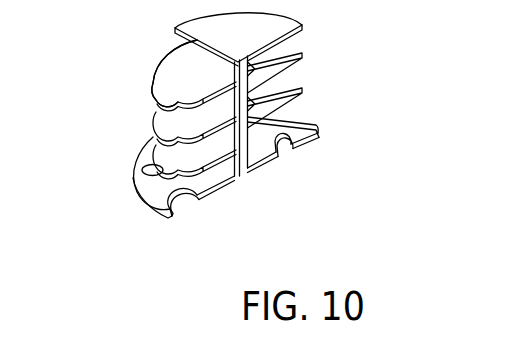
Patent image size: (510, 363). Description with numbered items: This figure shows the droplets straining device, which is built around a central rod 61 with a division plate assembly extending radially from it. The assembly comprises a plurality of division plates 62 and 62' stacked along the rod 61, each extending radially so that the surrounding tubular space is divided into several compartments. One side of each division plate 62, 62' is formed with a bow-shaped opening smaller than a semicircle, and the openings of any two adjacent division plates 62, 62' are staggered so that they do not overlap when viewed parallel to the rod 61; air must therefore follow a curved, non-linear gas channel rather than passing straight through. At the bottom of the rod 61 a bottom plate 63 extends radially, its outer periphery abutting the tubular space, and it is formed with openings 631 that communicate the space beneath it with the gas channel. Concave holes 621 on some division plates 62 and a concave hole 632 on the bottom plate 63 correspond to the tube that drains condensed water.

The rod 61 is at (242, 101).
The division plate 62 is at (206, 96).
The concave hole 621 is at (152, 83).
The division plate 62' is at (309, 85).
The bottom plate 63 is at (268, 152).
The opening 631 is at (293, 140).
The concave hole 632 is at (178, 200).